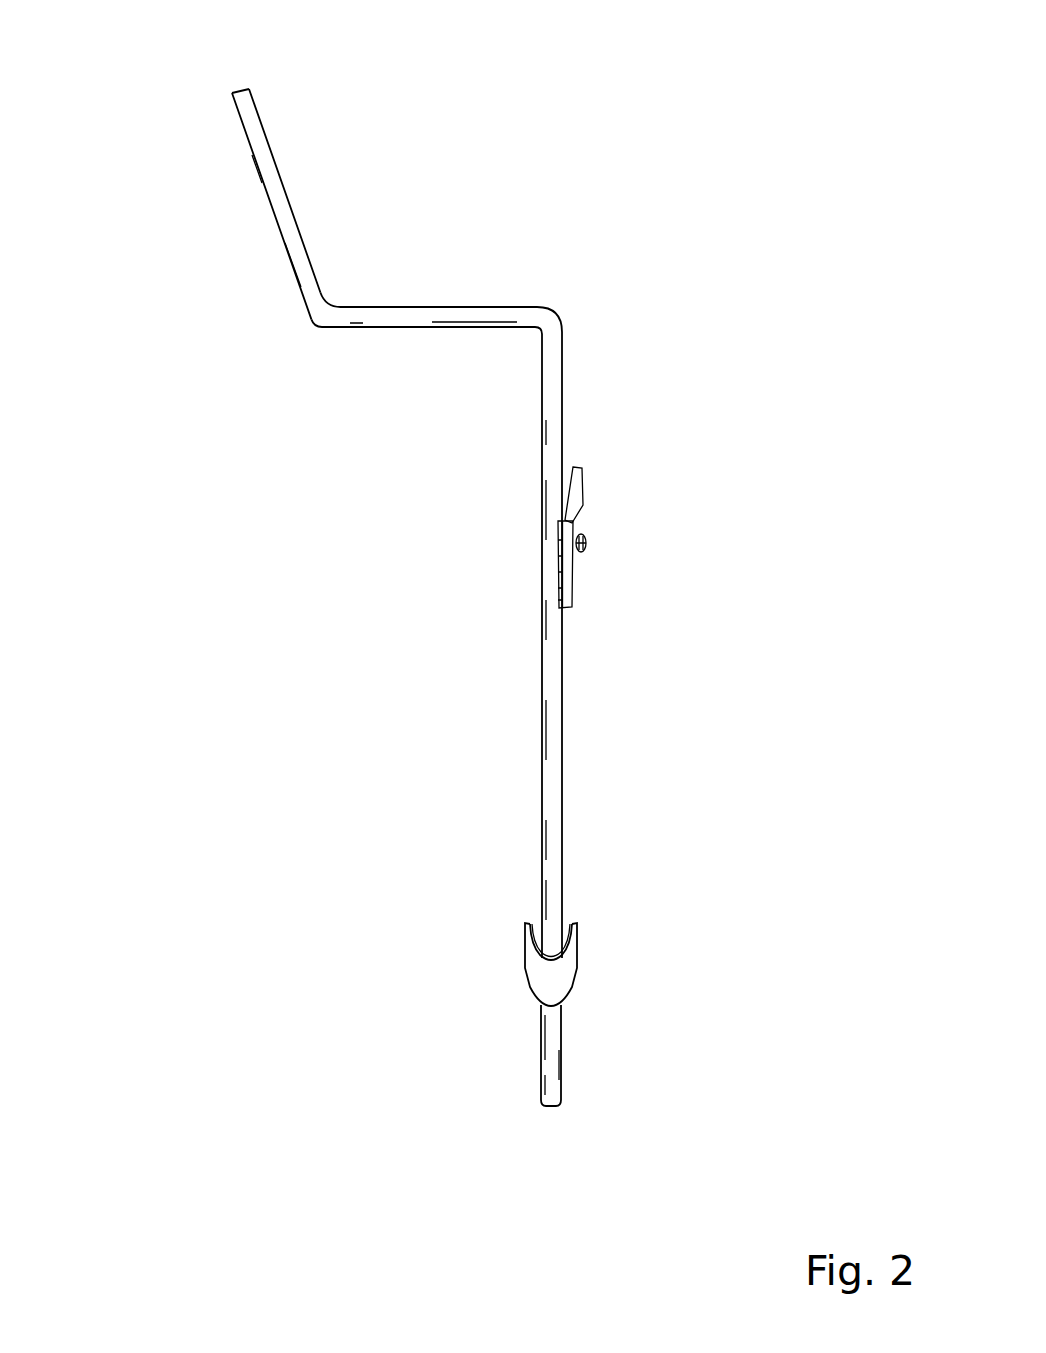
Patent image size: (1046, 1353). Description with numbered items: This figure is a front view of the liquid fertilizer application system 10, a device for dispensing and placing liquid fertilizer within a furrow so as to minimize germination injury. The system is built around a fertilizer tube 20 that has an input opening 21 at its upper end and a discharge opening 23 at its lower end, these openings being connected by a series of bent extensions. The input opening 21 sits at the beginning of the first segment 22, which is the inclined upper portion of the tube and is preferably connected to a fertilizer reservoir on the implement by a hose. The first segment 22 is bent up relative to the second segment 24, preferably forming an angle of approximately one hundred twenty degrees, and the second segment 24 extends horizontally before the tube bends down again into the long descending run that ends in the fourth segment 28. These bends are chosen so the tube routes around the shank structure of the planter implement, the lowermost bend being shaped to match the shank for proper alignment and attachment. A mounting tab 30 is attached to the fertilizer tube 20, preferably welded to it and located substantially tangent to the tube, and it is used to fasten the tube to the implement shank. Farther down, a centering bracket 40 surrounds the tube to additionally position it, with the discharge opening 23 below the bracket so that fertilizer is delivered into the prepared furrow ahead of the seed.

The liquid fertilizer application system 10 is at (750, 140).
The fertilizer tube 20 is at (637, 677).
The input opening 21 is at (238, 92).
The first segment 22 is at (278, 187).
The discharge opening 23 is at (552, 1107).
The second segment 24 is at (392, 322).
The fourth segment 28 is at (552, 865).
The mounting tab 30 is at (592, 492).
The centering bracket 40 is at (585, 950).